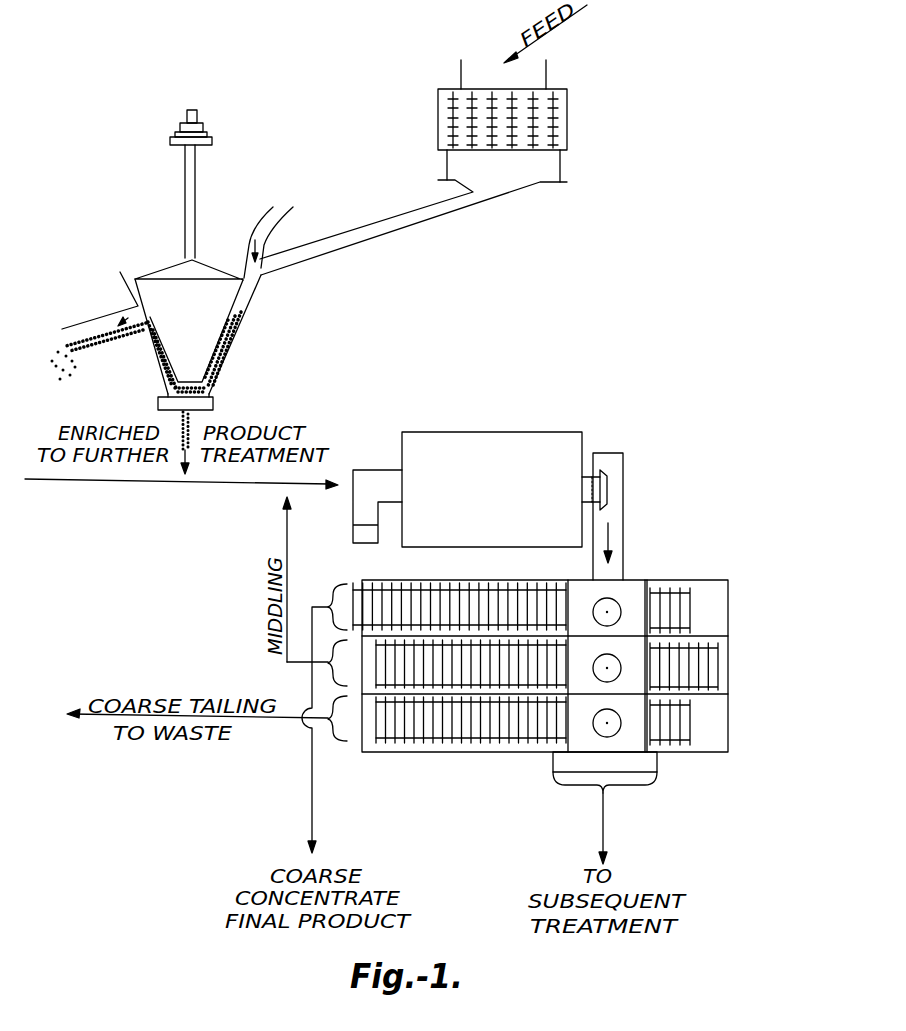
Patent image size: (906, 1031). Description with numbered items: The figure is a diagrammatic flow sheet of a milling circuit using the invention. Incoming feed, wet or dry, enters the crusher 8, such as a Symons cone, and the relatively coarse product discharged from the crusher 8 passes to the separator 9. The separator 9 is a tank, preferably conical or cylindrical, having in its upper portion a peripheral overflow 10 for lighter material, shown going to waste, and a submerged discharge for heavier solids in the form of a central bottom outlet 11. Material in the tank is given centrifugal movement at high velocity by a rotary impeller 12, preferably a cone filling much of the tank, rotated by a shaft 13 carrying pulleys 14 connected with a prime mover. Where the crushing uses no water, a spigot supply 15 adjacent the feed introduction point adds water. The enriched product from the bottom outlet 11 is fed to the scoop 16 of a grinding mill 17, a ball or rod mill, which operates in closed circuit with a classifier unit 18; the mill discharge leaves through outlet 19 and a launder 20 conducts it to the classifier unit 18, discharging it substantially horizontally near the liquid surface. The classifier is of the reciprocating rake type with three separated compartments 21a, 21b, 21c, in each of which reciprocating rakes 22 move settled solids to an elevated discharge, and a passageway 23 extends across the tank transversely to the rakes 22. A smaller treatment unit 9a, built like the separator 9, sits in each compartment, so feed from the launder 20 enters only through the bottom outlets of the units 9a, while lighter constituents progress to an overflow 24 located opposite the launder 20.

The crusher 8 is at (558, 90).
The separator 9 is at (250, 303).
The treatment unit 9a is at (617, 622).
The peripheral overflow 10 is at (130, 305).
The central bottom outlet 11 is at (208, 396).
The rotary impeller 12 is at (198, 328).
The shaft 13 is at (198, 180).
The pulleys 14 is at (212, 135).
The spigot supply 15 is at (257, 232).
The scoop 16 is at (377, 506).
The grinding mill 17 is at (492, 489).
The classifier unit 18 is at (695, 582).
The outlet 19 is at (608, 486).
The launder 20 is at (625, 528).
The compartment 21a is at (689, 611).
The compartment 21b is at (723, 690).
The compartment 21c is at (688, 722).
The reciprocating rakes 22 is at (422, 594).
The passageway 23 is at (648, 582).
The overflow 24 is at (657, 766).